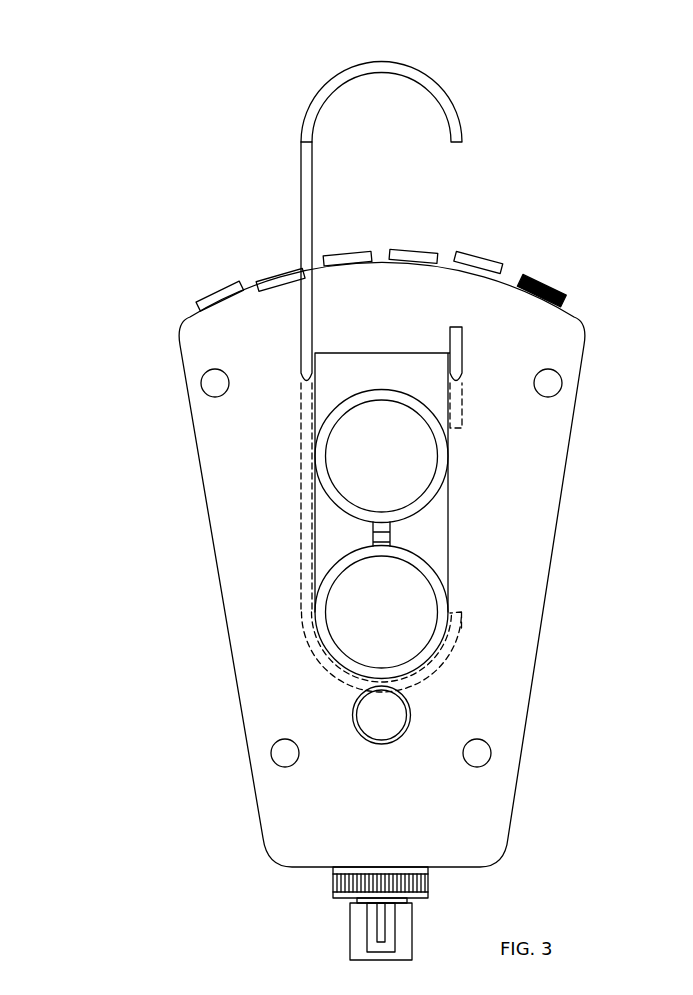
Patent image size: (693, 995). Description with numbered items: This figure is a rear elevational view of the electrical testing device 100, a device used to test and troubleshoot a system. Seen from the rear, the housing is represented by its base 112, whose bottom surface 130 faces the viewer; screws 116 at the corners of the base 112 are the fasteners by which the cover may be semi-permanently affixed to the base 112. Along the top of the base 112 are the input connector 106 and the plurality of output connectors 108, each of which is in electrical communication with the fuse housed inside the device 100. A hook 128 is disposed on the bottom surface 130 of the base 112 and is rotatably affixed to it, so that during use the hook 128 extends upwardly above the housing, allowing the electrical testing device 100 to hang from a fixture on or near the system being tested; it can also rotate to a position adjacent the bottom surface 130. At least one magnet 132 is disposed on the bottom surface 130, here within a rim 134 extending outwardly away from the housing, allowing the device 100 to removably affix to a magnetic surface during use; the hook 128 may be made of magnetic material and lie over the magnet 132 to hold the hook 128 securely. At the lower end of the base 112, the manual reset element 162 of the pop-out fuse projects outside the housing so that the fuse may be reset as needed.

The electrical testing device 100 is at (527, 153).
The input connector 106 is at (538, 284).
The plurality of output connectors 108 is at (223, 288).
The base 112 is at (490, 650).
The screws 116 is at (217, 383).
The hook 128 is at (438, 84).
The bottom surface 130 is at (518, 470).
The magnet 132 is at (377, 465).
The rim 134 is at (448, 601).
The manual reset element 162 is at (352, 930).